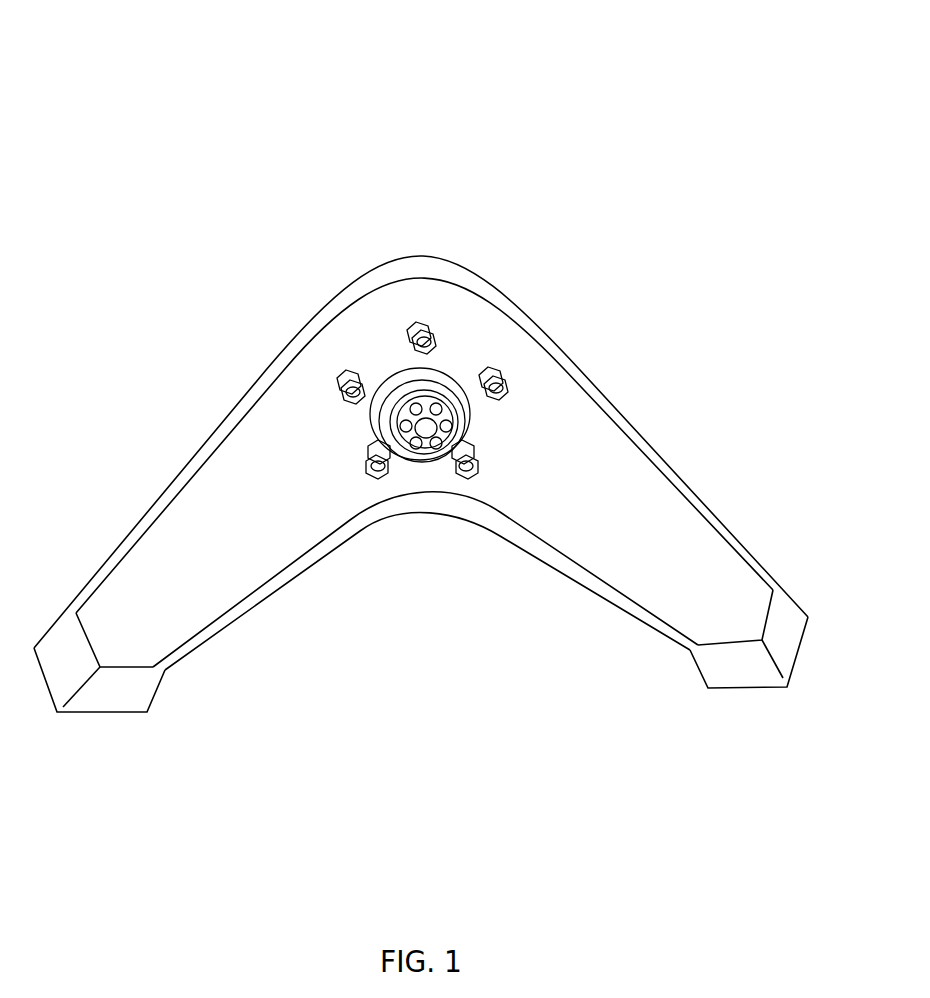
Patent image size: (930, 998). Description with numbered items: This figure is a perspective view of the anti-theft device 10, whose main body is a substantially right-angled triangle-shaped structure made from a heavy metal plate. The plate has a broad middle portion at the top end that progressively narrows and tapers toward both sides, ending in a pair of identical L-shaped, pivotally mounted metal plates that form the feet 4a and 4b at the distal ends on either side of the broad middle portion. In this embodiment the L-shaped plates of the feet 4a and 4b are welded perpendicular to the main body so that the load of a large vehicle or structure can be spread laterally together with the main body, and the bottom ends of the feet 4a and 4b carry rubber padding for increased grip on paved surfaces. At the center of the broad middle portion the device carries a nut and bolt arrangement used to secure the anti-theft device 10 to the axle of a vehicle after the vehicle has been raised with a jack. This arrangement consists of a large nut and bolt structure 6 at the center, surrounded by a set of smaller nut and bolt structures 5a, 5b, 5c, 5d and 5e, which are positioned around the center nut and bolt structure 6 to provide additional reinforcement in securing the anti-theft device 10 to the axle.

The anti-theft device 10 is at (423, 236).
The foot 4a is at (102, 712).
The foot 4b is at (740, 692).
The smaller nut and bolt structure 5a is at (425, 320).
The smaller nut and bolt structure 5b is at (502, 368).
The smaller nut and bolt structure 5c is at (466, 468).
The smaller nut and bolt structure 5d is at (385, 480).
The smaller nut and bolt structure 5e is at (347, 377).
The large nut and bolt structure 6 is at (423, 467).